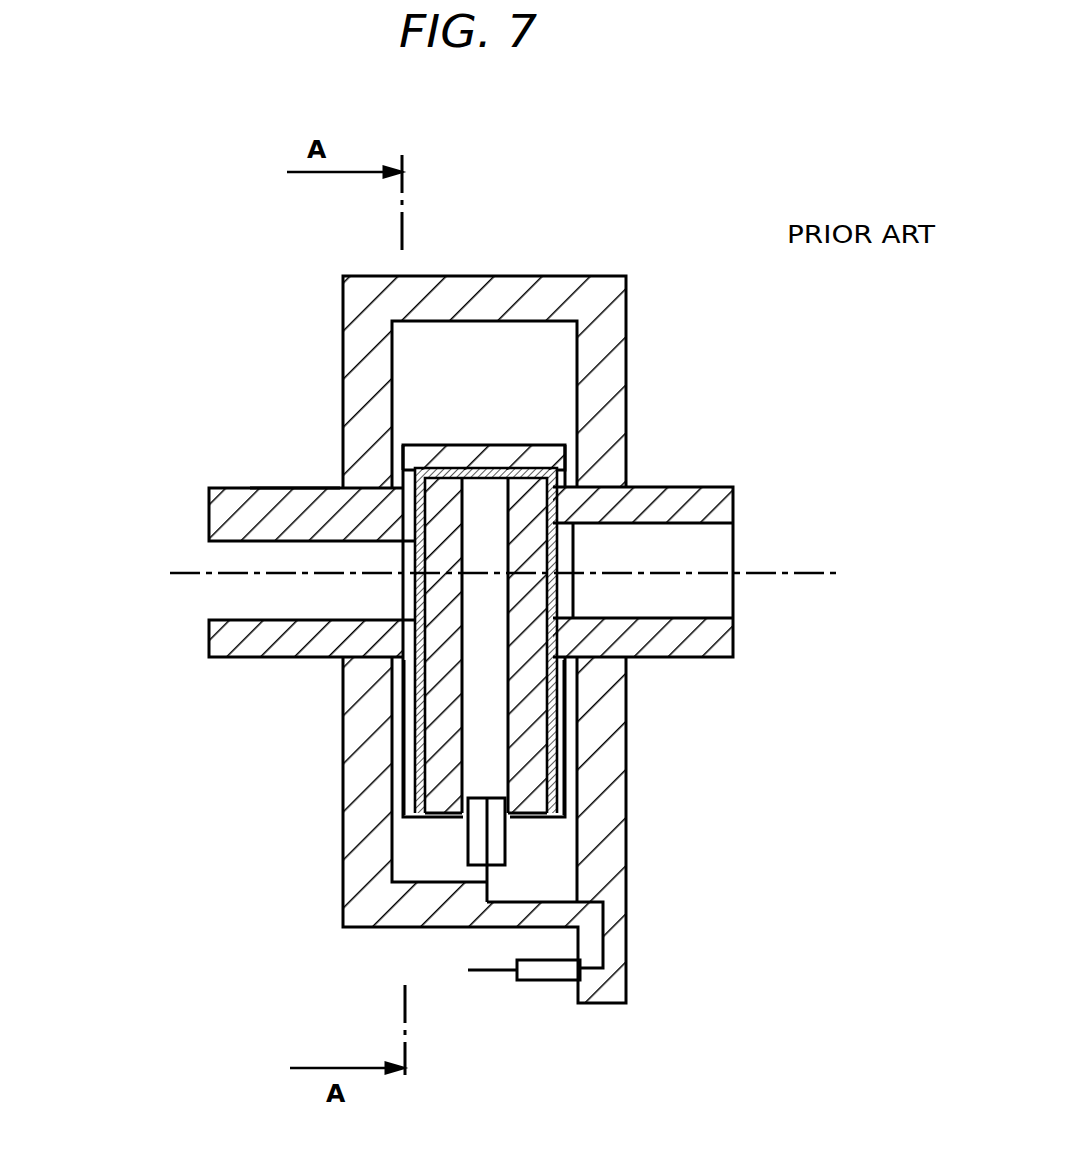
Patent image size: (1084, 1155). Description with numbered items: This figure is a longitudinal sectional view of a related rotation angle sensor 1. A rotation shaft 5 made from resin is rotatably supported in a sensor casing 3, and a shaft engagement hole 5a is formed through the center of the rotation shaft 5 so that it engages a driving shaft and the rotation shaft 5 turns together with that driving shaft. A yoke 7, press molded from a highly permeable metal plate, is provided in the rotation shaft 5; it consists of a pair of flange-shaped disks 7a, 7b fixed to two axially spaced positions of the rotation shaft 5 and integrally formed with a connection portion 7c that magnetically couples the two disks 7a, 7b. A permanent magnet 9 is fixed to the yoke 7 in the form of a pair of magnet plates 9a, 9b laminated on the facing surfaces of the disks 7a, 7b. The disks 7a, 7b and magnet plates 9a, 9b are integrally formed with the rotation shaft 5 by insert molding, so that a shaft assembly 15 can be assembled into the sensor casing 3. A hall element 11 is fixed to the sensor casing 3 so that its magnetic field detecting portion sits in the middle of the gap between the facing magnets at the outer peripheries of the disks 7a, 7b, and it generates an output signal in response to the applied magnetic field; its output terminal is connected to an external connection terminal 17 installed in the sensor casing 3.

The rotation angle sensor 1 is at (610, 263).
The sensor casing 3 is at (627, 351).
The rotation shaft 5 is at (682, 487).
The shaft engagement hole 5a is at (237, 557).
The yoke 7 is at (410, 642).
The disk 7a is at (408, 733).
The disk 7b is at (550, 733).
The connection portion 7c is at (490, 468).
The permanent magnet 9 is at (530, 635).
The magnet plate 9a is at (438, 805).
The magnet plate 9b is at (527, 807).
The hall element 11 is at (467, 850).
The shaft assembly 15 is at (295, 487).
The external connection terminal 17 is at (537, 972).